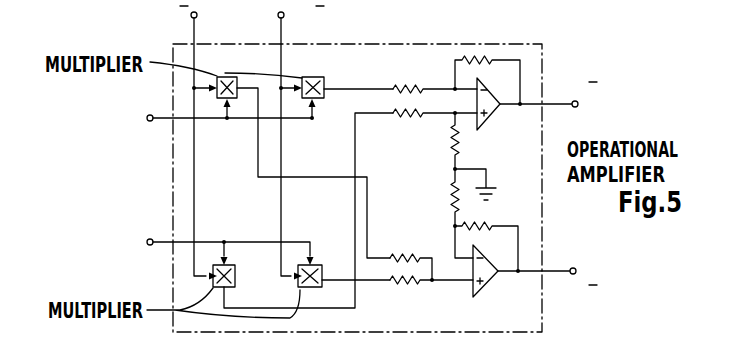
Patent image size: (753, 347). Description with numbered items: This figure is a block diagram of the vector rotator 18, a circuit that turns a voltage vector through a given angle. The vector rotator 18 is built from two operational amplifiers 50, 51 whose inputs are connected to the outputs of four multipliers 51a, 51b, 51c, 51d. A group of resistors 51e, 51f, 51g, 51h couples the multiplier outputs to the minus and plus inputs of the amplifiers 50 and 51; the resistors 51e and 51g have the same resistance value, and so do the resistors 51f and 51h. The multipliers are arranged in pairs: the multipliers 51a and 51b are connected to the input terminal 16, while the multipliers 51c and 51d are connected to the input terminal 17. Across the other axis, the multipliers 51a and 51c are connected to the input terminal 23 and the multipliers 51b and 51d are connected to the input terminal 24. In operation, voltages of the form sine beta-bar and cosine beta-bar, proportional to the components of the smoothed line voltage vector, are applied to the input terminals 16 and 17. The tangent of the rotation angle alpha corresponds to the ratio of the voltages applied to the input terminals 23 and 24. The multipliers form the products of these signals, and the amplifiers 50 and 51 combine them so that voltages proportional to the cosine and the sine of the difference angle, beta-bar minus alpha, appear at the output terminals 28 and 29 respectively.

The input terminal 16 is at (207, 9).
The input terminal 17 is at (278, 15).
The vector rotator 18 is at (110, 182).
The input terminal 23 is at (142, 119).
The input terminal 24 is at (147, 244).
The output terminal 28 is at (580, 255).
The output terminal 29 is at (578, 106).
The operational amplifier 50 is at (566, 150).
The operational amplifier 51 is at (560, 173).
The multiplier 51a is at (238, 75).
The multiplier 51b is at (235, 276).
The multiplier 51c is at (333, 76).
The multiplier 51d is at (321, 287).
The resistor 51e is at (412, 84).
The resistor 51f is at (418, 117).
The resistor 51g is at (416, 252).
The resistor 51h is at (418, 287).